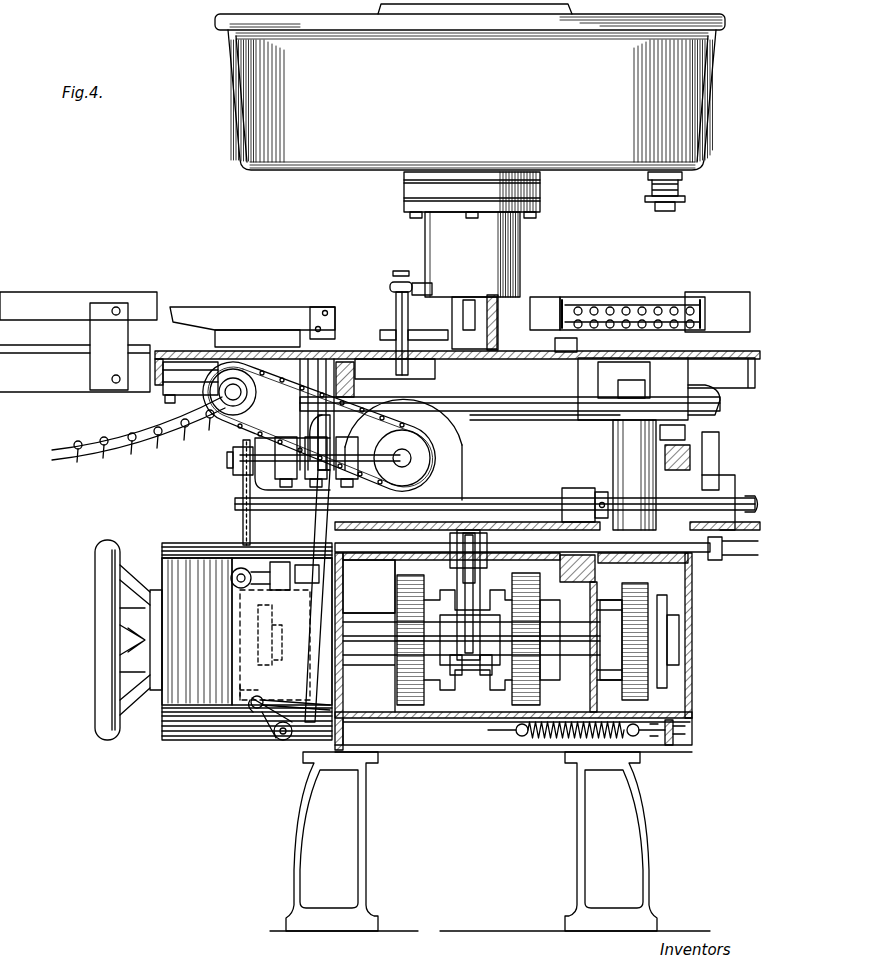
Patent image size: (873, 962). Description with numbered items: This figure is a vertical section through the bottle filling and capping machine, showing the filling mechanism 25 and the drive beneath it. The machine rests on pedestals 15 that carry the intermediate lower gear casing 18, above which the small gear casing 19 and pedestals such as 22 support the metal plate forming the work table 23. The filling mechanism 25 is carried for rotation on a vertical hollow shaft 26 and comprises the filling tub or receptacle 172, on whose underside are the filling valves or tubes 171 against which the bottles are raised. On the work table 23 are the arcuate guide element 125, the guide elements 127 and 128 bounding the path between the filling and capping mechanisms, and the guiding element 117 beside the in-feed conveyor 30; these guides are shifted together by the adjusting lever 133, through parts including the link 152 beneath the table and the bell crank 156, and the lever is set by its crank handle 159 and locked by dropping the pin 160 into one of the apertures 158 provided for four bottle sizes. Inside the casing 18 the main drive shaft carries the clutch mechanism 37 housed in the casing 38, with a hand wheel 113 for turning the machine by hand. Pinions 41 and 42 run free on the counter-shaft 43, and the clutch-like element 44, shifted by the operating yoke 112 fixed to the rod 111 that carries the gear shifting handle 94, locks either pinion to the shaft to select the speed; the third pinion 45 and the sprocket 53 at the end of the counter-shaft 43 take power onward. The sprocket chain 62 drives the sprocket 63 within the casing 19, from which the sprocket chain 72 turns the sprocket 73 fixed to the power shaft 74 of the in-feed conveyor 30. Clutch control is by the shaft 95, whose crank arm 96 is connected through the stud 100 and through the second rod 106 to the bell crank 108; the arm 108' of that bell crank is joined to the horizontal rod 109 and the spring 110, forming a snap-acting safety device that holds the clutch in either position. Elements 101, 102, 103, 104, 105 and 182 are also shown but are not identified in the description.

The filling tub 172 is at (470, 87).
The filling mechanism 25 is at (355, 150).
The filling valve or tube 171 is at (682, 188).
The vertical hollow shaft 26 is at (491, 280).
The guide element 127 is at (498, 300).
The pin 160 is at (400, 272).
The crank handle 159 is at (413, 288).
The adjusting lever 133 is at (396, 332).
The bell crank 156 is at (593, 340).
The guide element 128 is at (560, 342).
The guiding element 117 is at (10, 300).
The in-feed conveyor 30 is at (34, 350).
The arcuate guide element 125 is at (343, 310).
The work table 23 is at (168, 352).
The aperture 158 is at (400, 368).
The link 152 is at (532, 383).
The pedestal 22 is at (640, 465).
The bracket 182 is at (716, 470).
The power shaft 74 is at (222, 392).
The sprocket 73 is at (252, 402).
The sprocket chain 72 is at (262, 420).
The gear casing 19 is at (262, 472).
The sprocket 63 is at (230, 462).
The sprocket chain 62 is at (242, 516).
The crank arm 96 is at (318, 492).
The rod 111 is at (488, 502).
The shaft 95 is at (740, 502).
The gear shifting handle 94 is at (739, 556).
The casing 38 is at (168, 546).
The clutch mechanism 37 is at (172, 742).
The pivot 103 is at (233, 572).
The stud 100 is at (296, 562).
The block 102 is at (258, 552).
The frame 101 is at (285, 582).
The slide 104 is at (252, 643).
The stop 105 is at (250, 678).
The bell crank 108 is at (272, 739).
The horizontal rod 109 is at (262, 712).
The arm of bell crank 108' is at (211, 752).
The hand wheel 113 is at (104, 662).
The gear casing 18 is at (342, 678).
The rod 106 is at (346, 592).
The pinion 41 is at (410, 700).
The counter-shaft 43 is at (430, 628).
The operating yoke 112 is at (467, 652).
The clutch-like element 44 is at (482, 676).
The pinion 42 is at (541, 694).
The third pinion 45 is at (650, 692).
The sprocket 53 is at (668, 673).
The spring 110 is at (612, 742).
The pedestal 15 is at (345, 842).